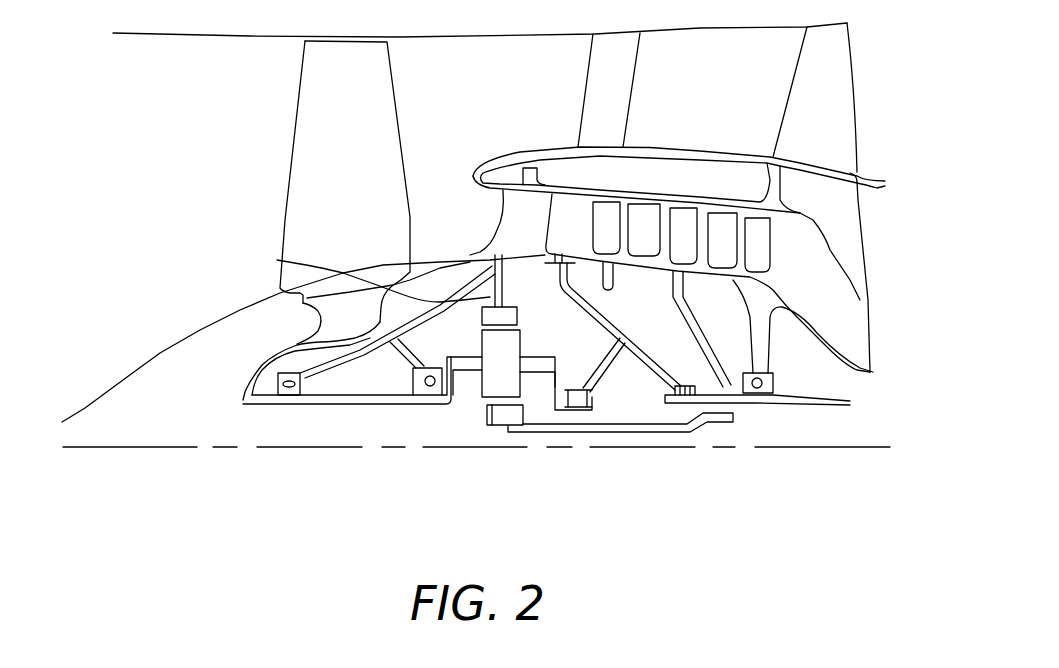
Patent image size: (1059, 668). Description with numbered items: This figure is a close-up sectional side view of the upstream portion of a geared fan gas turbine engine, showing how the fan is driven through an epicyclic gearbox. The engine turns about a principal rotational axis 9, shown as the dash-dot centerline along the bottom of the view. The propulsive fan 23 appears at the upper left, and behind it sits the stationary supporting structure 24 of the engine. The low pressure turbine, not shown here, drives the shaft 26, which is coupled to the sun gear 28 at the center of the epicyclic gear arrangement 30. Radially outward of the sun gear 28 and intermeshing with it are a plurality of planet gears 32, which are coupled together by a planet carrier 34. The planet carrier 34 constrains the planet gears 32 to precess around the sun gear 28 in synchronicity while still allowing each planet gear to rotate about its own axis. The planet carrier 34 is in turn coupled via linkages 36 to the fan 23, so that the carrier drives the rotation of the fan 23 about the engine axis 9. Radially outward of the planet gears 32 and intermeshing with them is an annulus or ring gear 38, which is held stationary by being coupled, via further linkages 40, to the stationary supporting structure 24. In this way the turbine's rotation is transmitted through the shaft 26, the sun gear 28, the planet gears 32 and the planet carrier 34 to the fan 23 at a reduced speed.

The principal rotational axis 9 is at (177, 447).
The propulsive fan 23 is at (305, 146).
The stationary supporting structure 24 is at (507, 223).
The shaft 26 is at (630, 428).
The sun gear 28 is at (500, 415).
The epicyclic gearbox 30 is at (500, 315).
The planet gears 32 is at (493, 385).
The planet carrier 34 is at (545, 400).
The linkages 36 is at (460, 400).
The ring gear 38 is at (378, 324).
The linkages 40 is at (277, 260).